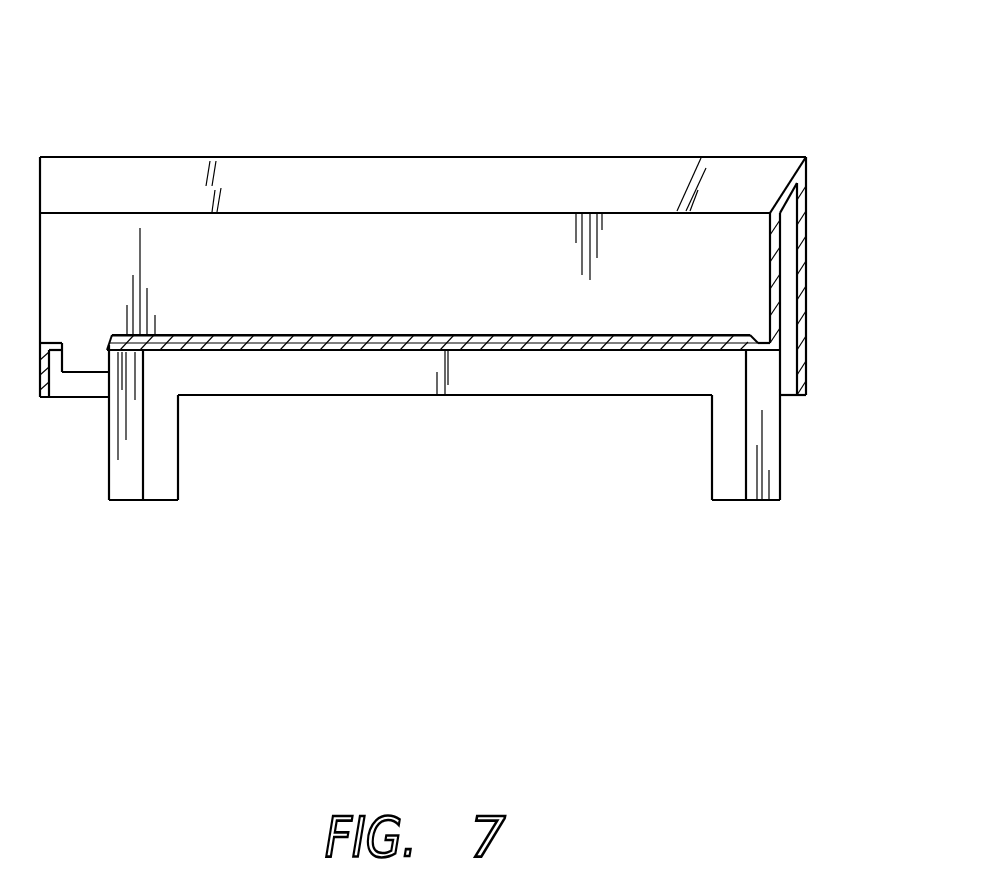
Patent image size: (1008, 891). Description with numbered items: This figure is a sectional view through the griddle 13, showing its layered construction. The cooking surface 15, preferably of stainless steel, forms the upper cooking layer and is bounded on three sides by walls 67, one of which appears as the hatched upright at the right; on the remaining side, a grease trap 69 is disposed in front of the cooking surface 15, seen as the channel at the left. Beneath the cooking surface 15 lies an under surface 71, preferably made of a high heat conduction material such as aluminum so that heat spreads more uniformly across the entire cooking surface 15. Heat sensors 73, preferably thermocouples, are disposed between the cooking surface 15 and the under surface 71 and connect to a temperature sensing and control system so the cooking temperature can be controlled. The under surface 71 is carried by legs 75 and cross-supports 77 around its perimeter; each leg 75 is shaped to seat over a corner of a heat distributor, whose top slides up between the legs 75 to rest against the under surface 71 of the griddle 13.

The griddle 13 is at (573, 129).
The cooking surface 15 is at (368, 337).
The walls 67 is at (725, 229).
The grease trap 69 is at (73, 370).
The under surface 71 is at (675, 350).
The heat sensors 73 is at (560, 341).
The legs 75 is at (783, 437).
The cross-supports 77 is at (302, 380).